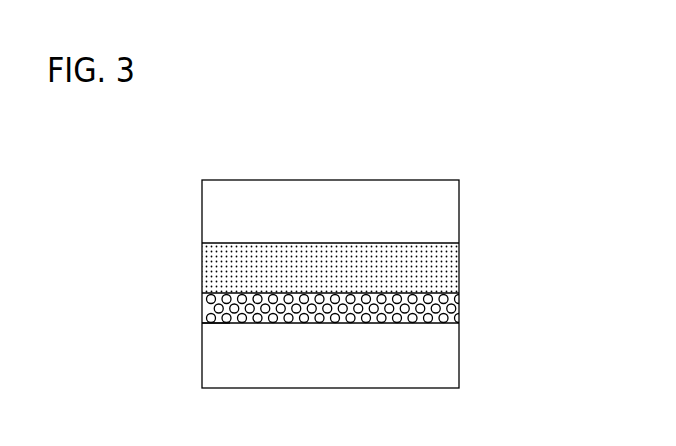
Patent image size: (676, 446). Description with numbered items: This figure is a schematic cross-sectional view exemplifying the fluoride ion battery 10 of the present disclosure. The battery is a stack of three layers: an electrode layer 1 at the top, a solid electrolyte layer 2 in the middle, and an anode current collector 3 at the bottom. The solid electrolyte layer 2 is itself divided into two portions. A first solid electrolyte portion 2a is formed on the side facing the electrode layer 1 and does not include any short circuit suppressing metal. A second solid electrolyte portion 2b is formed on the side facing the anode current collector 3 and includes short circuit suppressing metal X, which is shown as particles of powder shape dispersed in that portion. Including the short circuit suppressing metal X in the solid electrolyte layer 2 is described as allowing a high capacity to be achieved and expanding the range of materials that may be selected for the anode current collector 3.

The fluoride ion battery 10 is at (440, 165).
The electrode layer 1 is at (442, 212).
The solid electrolyte layer 2 is at (374, 285).
The first solid electrolyte portion 2a is at (452, 262).
The second solid electrolyte portion 2b is at (358, 309).
The anode current collector 3 is at (442, 357).
The short circuit suppressing metal X is at (203, 321).